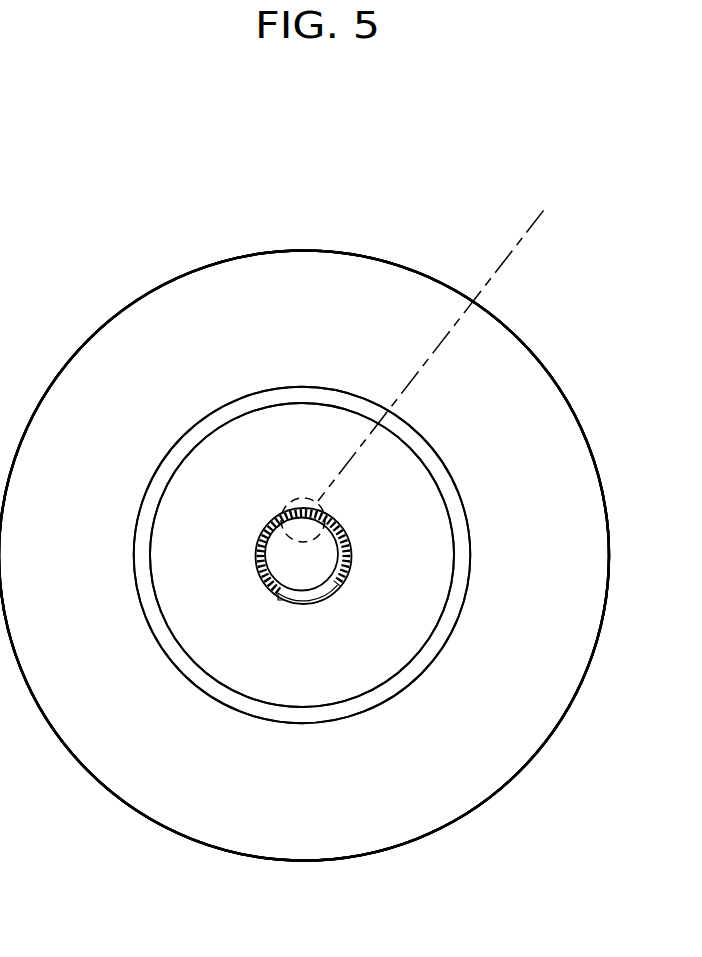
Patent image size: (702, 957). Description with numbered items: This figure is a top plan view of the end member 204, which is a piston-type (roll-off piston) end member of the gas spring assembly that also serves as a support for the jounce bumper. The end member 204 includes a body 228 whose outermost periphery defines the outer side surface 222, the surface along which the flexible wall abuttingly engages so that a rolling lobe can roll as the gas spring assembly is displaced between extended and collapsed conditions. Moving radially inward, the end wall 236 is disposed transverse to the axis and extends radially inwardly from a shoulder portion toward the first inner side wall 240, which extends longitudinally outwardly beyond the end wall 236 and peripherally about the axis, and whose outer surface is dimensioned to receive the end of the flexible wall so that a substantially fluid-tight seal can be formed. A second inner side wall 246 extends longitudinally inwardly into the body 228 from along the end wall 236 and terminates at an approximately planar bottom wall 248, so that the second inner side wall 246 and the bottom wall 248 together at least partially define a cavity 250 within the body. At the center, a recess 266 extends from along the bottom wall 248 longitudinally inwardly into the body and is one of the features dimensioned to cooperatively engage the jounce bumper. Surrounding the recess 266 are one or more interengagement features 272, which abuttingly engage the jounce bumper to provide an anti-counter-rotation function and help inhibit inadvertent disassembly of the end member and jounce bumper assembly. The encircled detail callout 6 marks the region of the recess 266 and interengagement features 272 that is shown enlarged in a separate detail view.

The end member 204 is at (140, 223).
The outer side surface 222 is at (235, 255).
The body 228 is at (342, 258).
The end wall 236 is at (488, 435).
The first inner side wall 240 is at (460, 525).
The bottom wall 248 is at (400, 595).
The second inner side wall 246 is at (386, 661).
The cavity 250 is at (323, 684).
The interengagement features 272 is at (288, 493).
The recess 266 is at (298, 577).
The detail view 6 location 6 is at (430, 356).